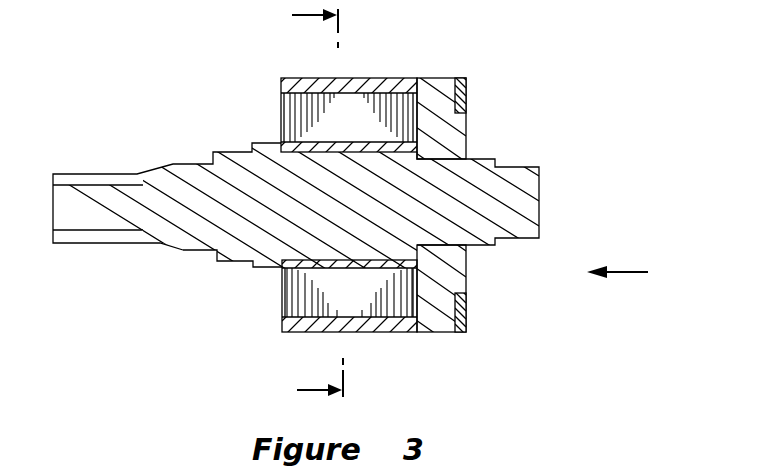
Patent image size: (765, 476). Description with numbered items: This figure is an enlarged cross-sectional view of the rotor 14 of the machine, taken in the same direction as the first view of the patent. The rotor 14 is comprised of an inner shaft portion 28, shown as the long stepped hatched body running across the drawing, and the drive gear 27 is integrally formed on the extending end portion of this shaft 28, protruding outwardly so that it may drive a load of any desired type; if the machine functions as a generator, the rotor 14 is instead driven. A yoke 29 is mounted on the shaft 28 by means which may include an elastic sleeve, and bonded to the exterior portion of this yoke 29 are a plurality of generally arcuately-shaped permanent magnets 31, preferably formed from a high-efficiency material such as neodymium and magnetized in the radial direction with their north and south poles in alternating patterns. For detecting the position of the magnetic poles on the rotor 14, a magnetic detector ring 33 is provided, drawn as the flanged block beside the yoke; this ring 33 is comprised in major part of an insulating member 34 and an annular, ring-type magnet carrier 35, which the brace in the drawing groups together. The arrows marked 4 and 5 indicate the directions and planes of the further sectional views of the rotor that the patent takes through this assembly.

The section line 4 is at (629, 274).
The section line 5 is at (293, 204).
The rotor 14 is at (230, 62).
The drive gear 27 is at (82, 173).
The inner shaft portion 28 is at (200, 250).
The yoke 29 is at (282, 293).
The permanent magnets 31 is at (383, 333).
The magnetic detector ring 33 is at (583, 88).
The insulating member 34 is at (434, 78).
The magnet carrier 35 is at (465, 93).